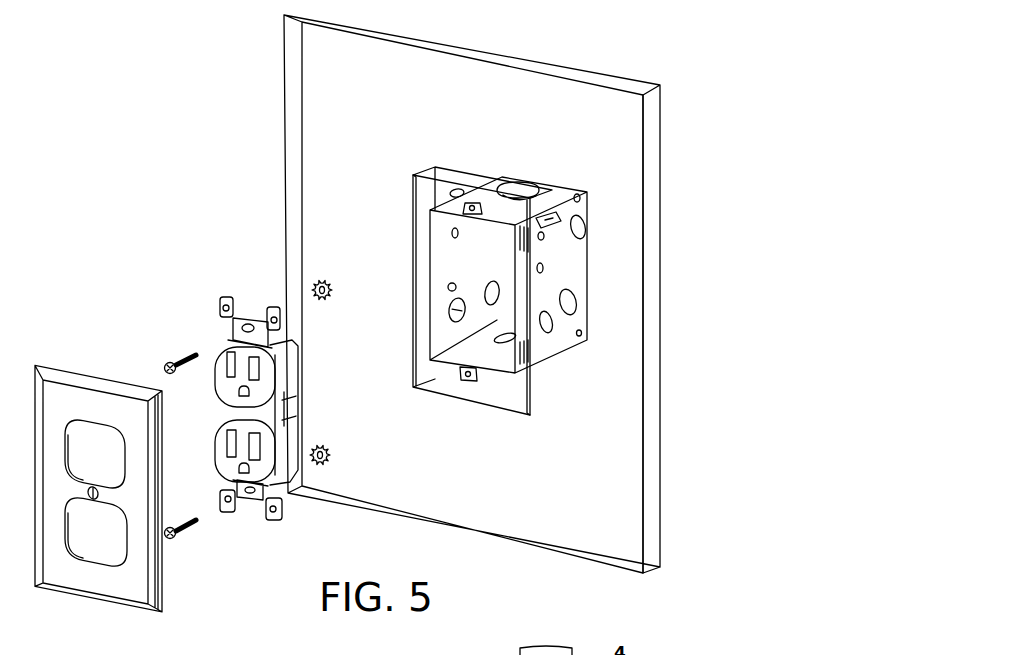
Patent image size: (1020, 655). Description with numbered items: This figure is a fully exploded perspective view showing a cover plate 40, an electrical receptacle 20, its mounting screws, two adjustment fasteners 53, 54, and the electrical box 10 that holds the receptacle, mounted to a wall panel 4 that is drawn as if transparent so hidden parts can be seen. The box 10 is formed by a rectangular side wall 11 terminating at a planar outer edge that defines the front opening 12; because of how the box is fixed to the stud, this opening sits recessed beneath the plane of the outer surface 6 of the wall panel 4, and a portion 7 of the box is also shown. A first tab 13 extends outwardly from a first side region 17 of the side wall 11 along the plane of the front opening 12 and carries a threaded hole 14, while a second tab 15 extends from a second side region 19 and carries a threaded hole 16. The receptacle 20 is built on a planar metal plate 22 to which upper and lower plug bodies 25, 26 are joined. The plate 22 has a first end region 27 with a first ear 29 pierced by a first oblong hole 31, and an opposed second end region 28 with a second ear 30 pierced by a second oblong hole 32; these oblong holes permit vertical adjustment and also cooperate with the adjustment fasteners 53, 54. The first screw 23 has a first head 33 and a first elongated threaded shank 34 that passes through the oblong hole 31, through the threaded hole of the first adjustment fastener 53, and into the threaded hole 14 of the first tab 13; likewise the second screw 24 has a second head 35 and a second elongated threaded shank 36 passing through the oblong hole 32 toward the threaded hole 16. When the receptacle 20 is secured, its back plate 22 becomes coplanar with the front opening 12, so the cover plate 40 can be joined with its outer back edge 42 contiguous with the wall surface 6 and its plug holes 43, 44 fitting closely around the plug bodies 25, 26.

The wall panel 4 is at (664, 160).
The outer surface 6 is at (644, 233).
The frame interior surface 7 is at (424, 298).
The electrical box 10 is at (495, 278).
The side wall 11 is at (520, 180).
The front opening 12 is at (414, 256).
The first tab 13 is at (470, 203).
The threaded hole 14 is at (476, 206).
The second tab 15 is at (463, 372).
The threaded hole 16 is at (470, 376).
The first side region 17 is at (450, 203).
The second side region 19 is at (497, 363).
The electrical receptacle 20 is at (248, 400).
The planar plate 22 is at (225, 333).
The first screw 23 is at (165, 352).
The second screw 24 is at (186, 550).
The plug body 25 is at (226, 384).
The plug body 26 is at (227, 463).
The first end region 27 is at (269, 338).
The second end region 28 is at (270, 490).
The first ear 29 is at (266, 320).
The second ear 30 is at (258, 506).
The first oblong hole 31 is at (247, 323).
The second oblong hole 32 is at (250, 496).
The first head 33 is at (164, 369).
The first elongated threaded shank 34 is at (185, 357).
The second head 35 is at (172, 525).
The second elongated threaded shank 36 is at (187, 532).
The cover plate 40 is at (68, 590).
The outer back edge 42 is at (162, 446).
The plug hole 43 is at (72, 468).
The plug hole 44 is at (72, 546).
The first adjustment fastener 53 is at (320, 278).
The second adjustment fastener 54 is at (321, 466).